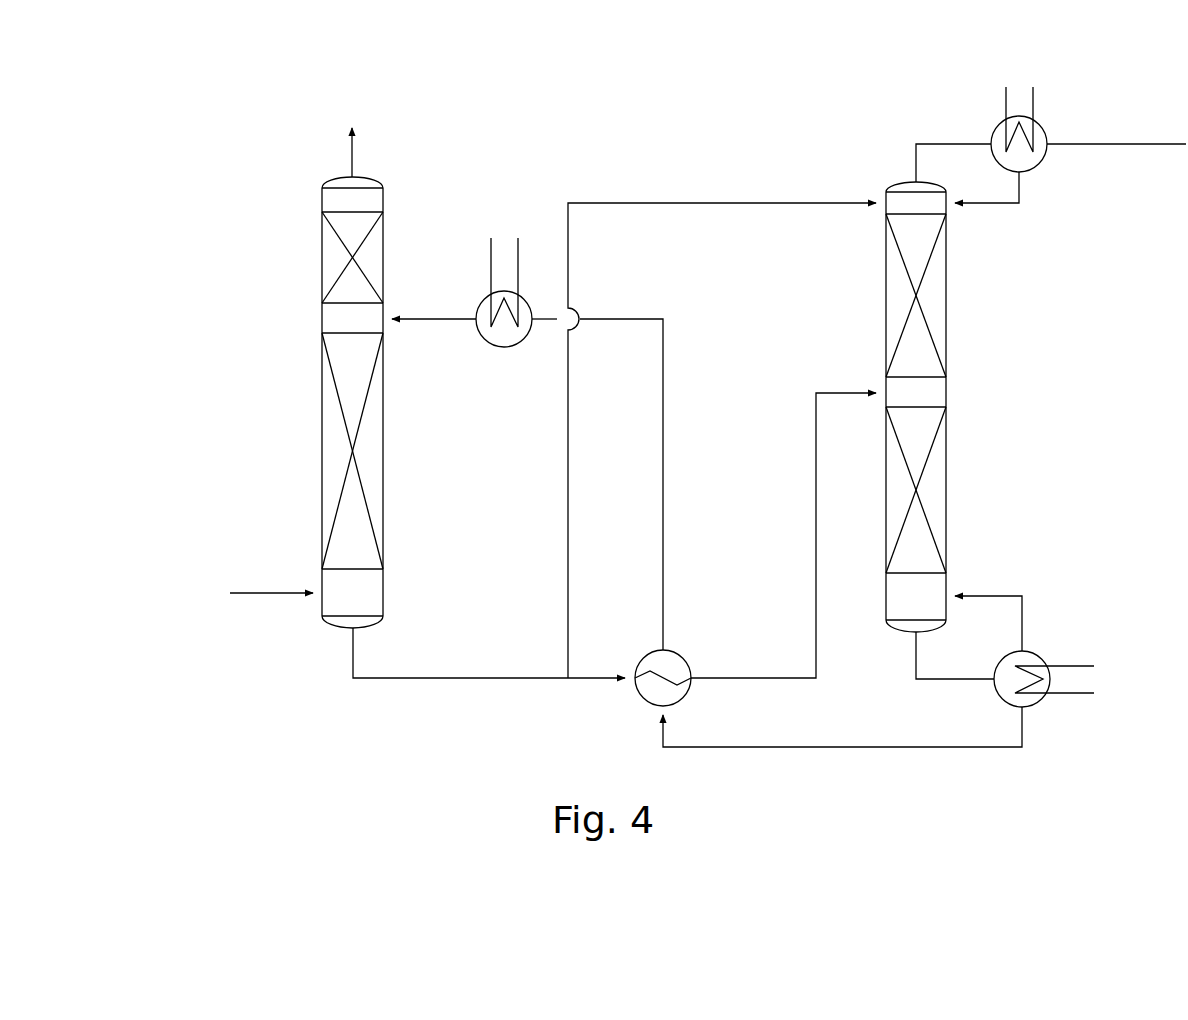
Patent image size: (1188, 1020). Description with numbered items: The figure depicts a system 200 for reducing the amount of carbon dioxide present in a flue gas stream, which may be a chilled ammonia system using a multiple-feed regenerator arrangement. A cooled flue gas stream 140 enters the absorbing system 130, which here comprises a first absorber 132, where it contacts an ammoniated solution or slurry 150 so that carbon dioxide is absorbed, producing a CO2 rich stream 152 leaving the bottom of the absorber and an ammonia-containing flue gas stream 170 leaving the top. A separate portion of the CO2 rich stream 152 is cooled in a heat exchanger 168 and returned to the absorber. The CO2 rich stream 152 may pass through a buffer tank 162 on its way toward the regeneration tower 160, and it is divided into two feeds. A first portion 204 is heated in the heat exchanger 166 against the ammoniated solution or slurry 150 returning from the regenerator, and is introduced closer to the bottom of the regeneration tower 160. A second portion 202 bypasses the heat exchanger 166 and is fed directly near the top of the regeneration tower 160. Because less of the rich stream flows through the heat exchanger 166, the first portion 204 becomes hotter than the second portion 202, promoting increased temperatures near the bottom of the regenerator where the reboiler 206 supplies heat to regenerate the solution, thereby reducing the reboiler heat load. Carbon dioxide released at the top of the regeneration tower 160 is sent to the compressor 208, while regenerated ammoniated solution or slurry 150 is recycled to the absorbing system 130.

The absorbing system 130 is at (332, 707).
The first absorber 132 is at (322, 257).
The cooled flue gas stream 140 is at (288, 590).
The ammoniated solution or slurry 150 is at (663, 517).
The CO2 rich stream 152 is at (490, 677).
The regeneration tower 160 is at (885, 297).
The buffer tank 162 is at (1086, 104).
The heat exchanger 166 is at (680, 655).
The heat exchanger 168 is at (506, 347).
The ammonia-containing flue gas stream 170 is at (350, 153).
The system 200 is at (718, 90).
The second portion of the CO2 rich stream 202 is at (568, 517).
The first portion of the CO2 rich stream 204 is at (816, 517).
The reboiler 206 is at (1040, 658).
The compressor 208 is at (1038, 165).